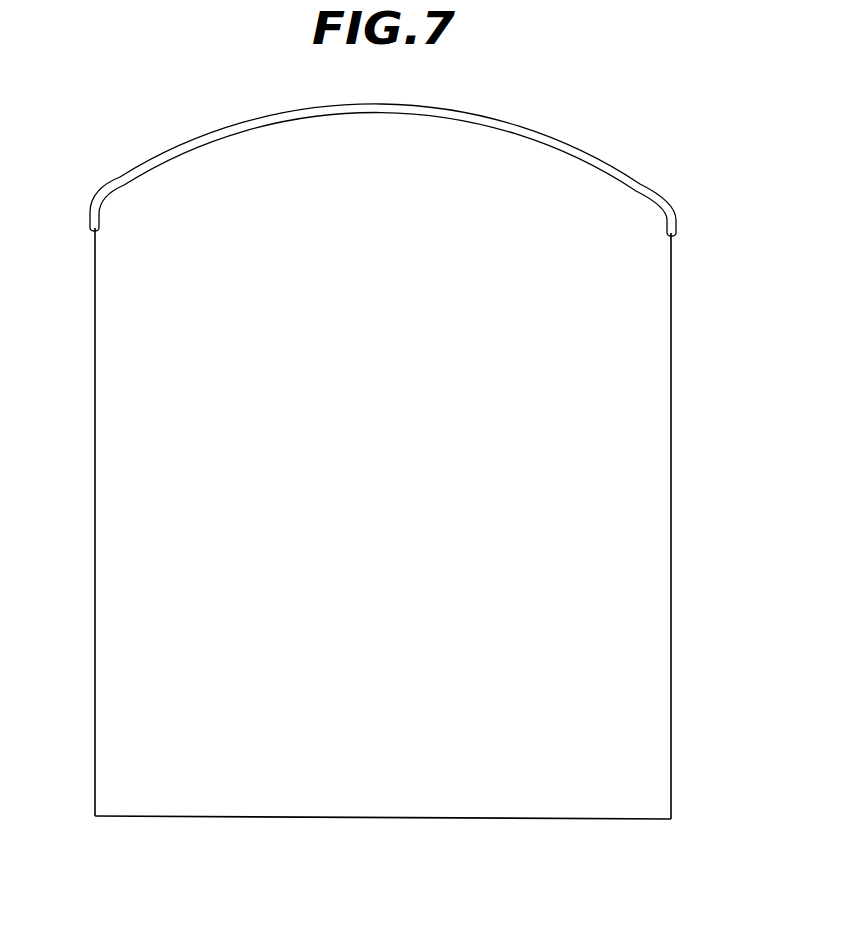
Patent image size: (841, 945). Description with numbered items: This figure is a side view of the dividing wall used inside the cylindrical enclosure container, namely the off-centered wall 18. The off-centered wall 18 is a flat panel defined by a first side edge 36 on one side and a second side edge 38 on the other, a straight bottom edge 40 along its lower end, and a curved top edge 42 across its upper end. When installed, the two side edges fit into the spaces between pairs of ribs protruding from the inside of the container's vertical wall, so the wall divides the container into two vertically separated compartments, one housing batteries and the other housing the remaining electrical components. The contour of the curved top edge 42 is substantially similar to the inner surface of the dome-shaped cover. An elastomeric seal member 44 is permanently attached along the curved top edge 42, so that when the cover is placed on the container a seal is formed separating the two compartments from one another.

The off-centered wall 18 is at (385, 549).
The first side edge 36 is at (671, 512).
The second side edge 38 is at (95, 620).
The bottom edge 40 is at (188, 817).
The curved top edge 42 is at (383, 149).
The elastomeric seal member 44 is at (433, 108).